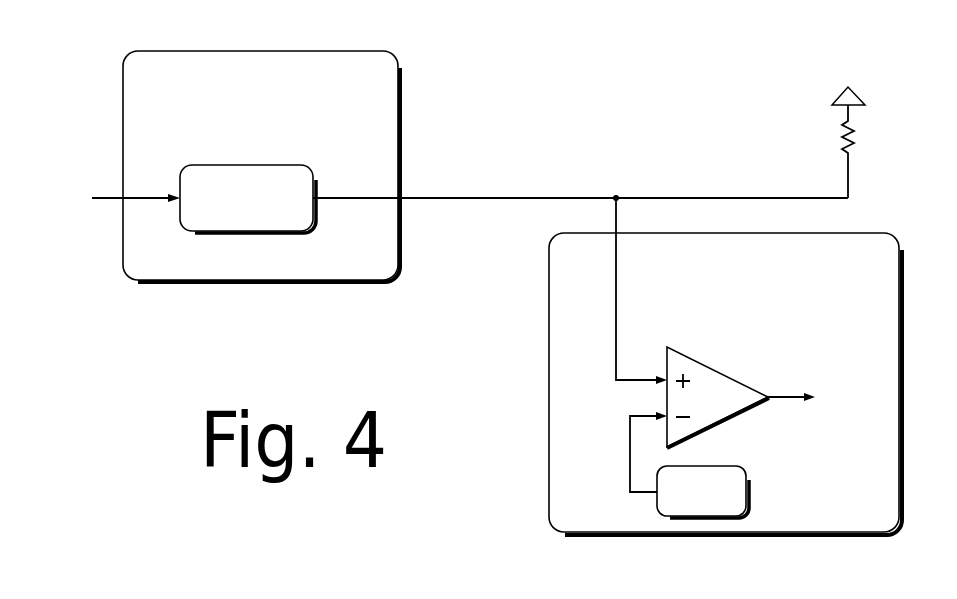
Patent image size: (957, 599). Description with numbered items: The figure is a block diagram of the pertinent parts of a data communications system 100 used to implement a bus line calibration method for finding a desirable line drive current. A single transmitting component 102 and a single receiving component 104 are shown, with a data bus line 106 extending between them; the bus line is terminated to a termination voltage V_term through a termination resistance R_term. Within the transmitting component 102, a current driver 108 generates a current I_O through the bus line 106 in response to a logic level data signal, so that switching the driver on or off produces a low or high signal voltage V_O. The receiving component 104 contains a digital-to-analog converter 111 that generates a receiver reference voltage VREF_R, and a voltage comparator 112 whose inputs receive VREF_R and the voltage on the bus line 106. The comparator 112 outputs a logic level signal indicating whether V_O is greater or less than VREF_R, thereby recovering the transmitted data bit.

The data communications system 100 is at (549, 65).
The transmitting component 102 is at (377, 72).
The receiving component 104 is at (562, 318).
The data bus line 106 is at (731, 198).
The current driver 108 is at (220, 168).
The digital-to-analog converter 111 is at (722, 475).
The voltage comparator 112 is at (702, 372).